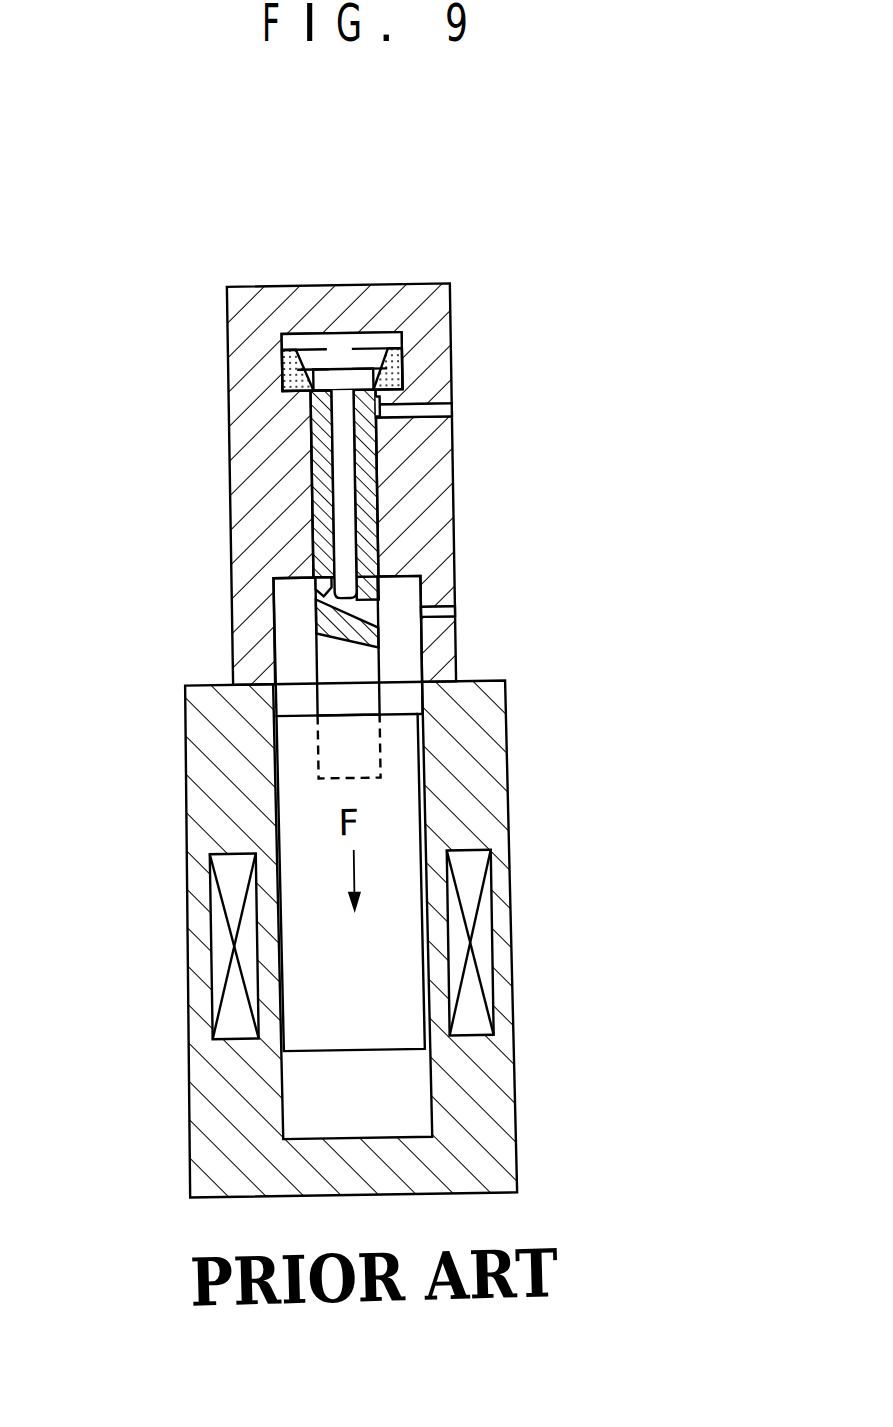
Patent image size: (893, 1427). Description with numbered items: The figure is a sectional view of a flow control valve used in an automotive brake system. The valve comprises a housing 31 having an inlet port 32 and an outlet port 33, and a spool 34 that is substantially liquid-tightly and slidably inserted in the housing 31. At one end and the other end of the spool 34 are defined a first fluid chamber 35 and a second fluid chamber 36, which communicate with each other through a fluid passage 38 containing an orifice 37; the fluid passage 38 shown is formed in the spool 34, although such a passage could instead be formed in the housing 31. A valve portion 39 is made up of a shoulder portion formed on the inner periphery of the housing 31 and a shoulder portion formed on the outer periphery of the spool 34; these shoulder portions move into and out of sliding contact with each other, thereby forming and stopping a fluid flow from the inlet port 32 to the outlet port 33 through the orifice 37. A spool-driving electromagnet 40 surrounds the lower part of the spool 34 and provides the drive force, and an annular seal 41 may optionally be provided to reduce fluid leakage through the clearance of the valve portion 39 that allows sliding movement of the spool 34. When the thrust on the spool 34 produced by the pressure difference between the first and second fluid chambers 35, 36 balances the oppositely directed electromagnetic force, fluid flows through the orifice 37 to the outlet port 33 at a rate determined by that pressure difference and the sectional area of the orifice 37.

The housing 31 is at (429, 294).
The inlet port 32 is at (454, 614).
The outlet port 33 is at (455, 415).
The spool 34 is at (365, 608).
The first fluid chamber 35 is at (287, 624).
The second fluid chamber 36 is at (350, 348).
The orifice 37 is at (333, 587).
The fluid passage 38 is at (341, 493).
The valve portion 39 is at (388, 404).
The spool-driving electromagnet 40 is at (182, 961).
The seal member 41 is at (249, 322).